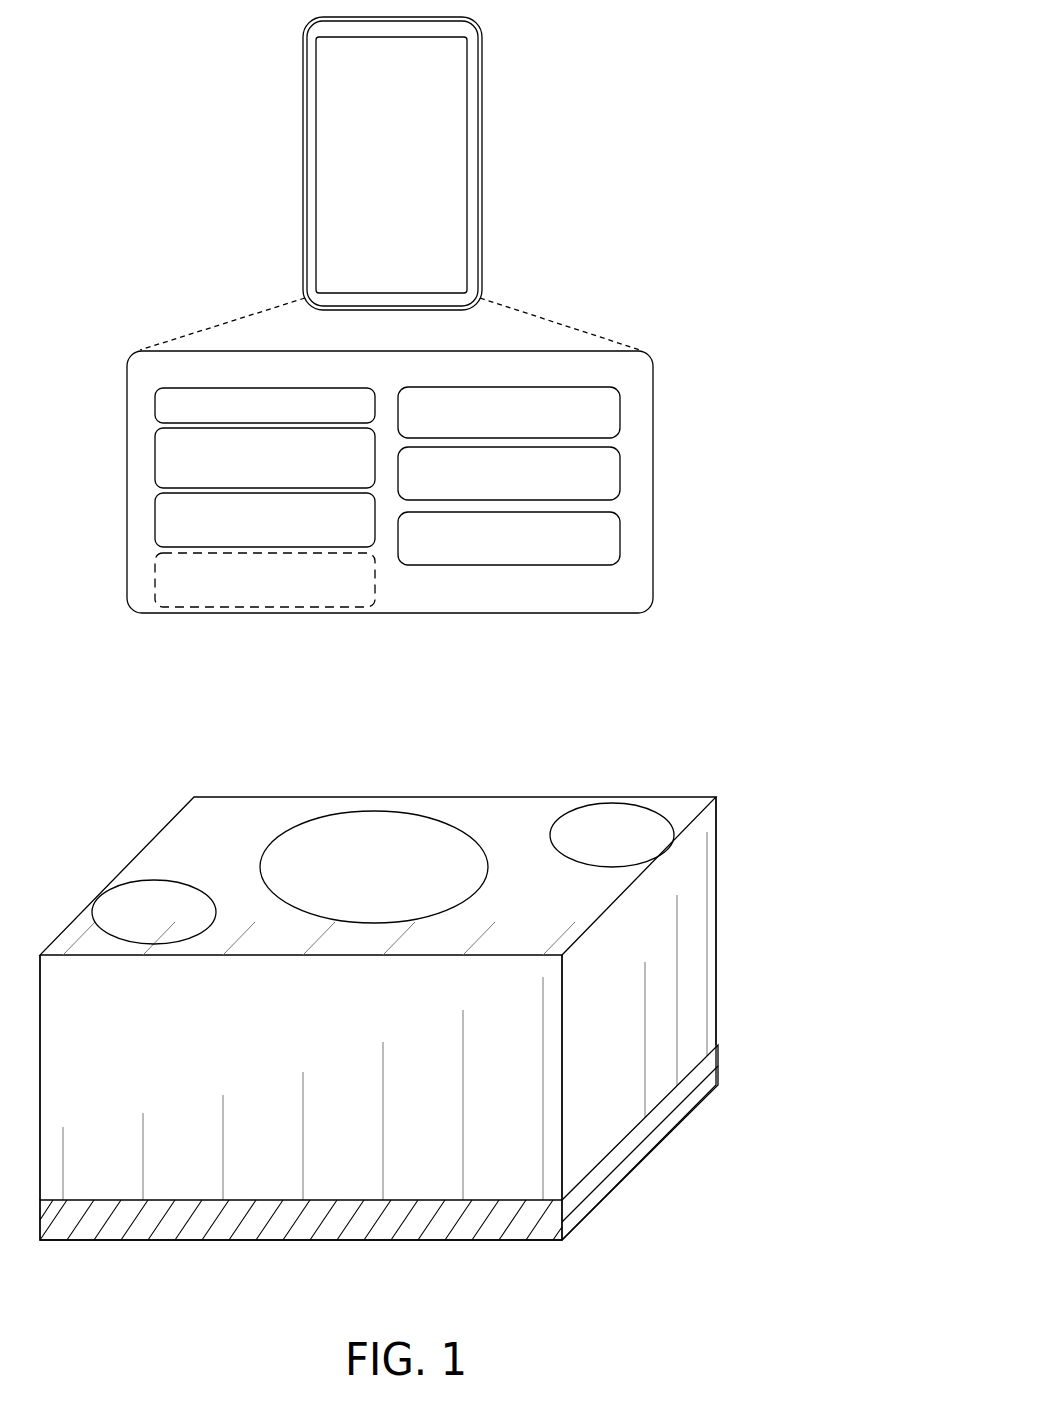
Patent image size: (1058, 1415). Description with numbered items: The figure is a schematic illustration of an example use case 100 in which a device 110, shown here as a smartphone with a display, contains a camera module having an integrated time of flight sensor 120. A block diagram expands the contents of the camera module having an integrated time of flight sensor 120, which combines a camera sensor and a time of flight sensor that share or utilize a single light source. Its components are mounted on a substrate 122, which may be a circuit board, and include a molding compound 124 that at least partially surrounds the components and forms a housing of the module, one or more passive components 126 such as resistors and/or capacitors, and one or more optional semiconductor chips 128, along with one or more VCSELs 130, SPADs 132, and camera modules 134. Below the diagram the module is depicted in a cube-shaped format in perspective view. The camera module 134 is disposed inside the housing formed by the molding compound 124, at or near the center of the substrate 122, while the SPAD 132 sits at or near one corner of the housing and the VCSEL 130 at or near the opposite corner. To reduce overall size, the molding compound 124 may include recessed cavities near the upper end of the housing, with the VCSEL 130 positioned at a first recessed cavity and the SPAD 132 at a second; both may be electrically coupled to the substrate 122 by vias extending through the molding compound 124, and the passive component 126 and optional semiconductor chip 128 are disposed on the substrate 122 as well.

The example use case 100 is at (788, 70).
The device 110 is at (480, 125).
The camera module having an integrated time of flight sensor 120 is at (653, 365).
The substrate 122 is at (152, 410).
The molding compound 124 is at (153, 457).
The passive components 126 is at (153, 517).
The semiconductor chips 128 is at (153, 577).
The VCSEL 130 is at (620, 412).
The SPAD 132 is at (620, 473).
The camera module 134 is at (620, 533).